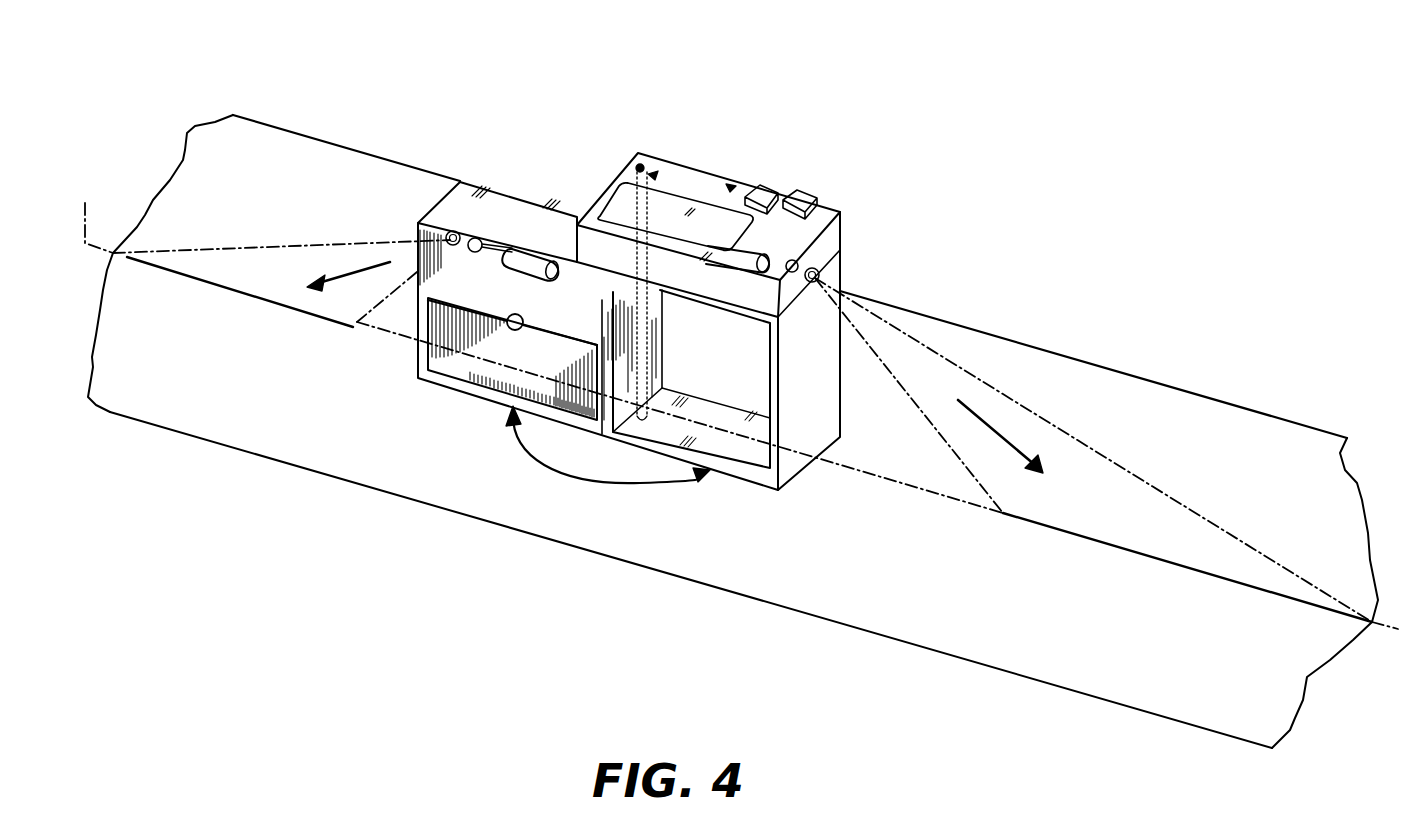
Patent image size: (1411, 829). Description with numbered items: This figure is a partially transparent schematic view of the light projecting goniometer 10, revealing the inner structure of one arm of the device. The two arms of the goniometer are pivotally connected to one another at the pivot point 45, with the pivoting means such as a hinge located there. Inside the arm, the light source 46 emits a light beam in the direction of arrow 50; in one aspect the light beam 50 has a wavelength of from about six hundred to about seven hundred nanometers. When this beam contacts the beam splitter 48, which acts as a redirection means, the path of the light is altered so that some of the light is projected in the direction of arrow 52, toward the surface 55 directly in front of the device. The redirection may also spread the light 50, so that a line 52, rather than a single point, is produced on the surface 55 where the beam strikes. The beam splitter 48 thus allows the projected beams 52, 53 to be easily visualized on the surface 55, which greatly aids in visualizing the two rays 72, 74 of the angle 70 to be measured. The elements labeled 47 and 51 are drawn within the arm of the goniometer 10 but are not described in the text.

The light projecting goniometer 10 is at (711, 114).
The pivot point 45 is at (638, 153).
The light source 46 is at (748, 242).
The laser module 47 is at (540, 253).
The beam splitter 48 is at (477, 238).
The light beam 50 is at (798, 260).
The connecting shaft 51 is at (507, 253).
The projected beam / line 52 is at (1005, 435).
The projected beam 53 is at (350, 277).
The surface 55 is at (287, 453).
The angle 70 is at (583, 477).
The ray 72 is at (255, 246).
The ray 74 is at (900, 485).